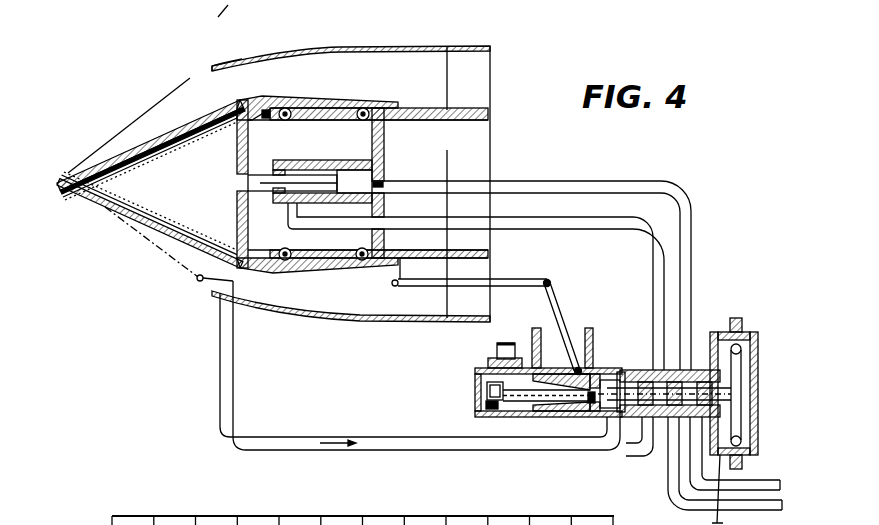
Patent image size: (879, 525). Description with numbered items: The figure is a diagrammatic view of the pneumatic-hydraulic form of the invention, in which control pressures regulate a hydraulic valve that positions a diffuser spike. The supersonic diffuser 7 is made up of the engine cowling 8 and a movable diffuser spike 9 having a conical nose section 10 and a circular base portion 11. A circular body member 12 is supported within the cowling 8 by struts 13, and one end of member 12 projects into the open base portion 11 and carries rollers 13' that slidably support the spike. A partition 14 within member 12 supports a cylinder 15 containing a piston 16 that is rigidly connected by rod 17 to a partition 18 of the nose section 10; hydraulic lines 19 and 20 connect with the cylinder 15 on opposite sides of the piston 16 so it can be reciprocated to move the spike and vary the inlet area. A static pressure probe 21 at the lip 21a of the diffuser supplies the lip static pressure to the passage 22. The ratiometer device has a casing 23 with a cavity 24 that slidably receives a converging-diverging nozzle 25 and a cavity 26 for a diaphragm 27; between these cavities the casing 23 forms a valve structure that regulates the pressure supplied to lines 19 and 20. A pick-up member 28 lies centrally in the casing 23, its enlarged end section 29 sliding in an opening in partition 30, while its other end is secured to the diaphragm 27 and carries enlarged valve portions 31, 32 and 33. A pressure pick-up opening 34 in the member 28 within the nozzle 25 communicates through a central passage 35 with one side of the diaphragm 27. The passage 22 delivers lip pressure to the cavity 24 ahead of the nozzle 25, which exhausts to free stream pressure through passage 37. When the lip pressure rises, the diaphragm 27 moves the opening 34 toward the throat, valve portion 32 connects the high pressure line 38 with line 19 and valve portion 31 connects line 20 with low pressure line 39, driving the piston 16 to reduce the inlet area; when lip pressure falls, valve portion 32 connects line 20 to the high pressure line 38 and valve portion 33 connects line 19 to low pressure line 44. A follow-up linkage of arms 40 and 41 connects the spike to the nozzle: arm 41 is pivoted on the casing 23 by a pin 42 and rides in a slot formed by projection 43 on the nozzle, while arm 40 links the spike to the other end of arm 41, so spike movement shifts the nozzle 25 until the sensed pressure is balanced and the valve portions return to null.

The supersonic diffuser 7 is at (235, 61).
The engine cowling 8 is at (343, 46).
The movable diffuser spike 9 is at (148, 238).
The conical nose section 10 is at (76, 190).
The circular base portion 11 is at (310, 270).
The circular body member 12 is at (488, 112).
The struts 13 is at (474, 182).
The rollers 13' is at (324, 186).
The partition 14 is at (387, 150).
The cylinder 15 is at (305, 164).
The piston 16 is at (333, 170).
The rod 17 is at (262, 176).
The partition 18 is at (242, 240).
The hydraulic line 19 is at (600, 181).
The hydraulic line 20 is at (597, 218).
The static pressure probe 21 is at (197, 282).
The lip 21a is at (208, 108).
The passage 22 is at (228, 412).
The casing 23 is at (476, 409).
The cavity 24 is at (528, 403).
The converging-diverging nozzle 25 is at (594, 418).
The cavity 26 is at (746, 381).
The diaphragm 27 is at (752, 343).
The pick-up member 28 is at (508, 401).
The enlarged end section 29 is at (486, 390).
The partition 30 is at (484, 418).
The valve portion 31 is at (642, 380).
The valve portion 32 is at (672, 369).
The valve portion 33 is at (702, 380).
The pressure pick-up opening 34 is at (576, 414).
The central passage 35 is at (619, 377).
The passage 37 is at (497, 352).
The high pressure line 38 is at (673, 494).
The low pressure line 39 is at (650, 430).
The arm 40 is at (520, 279).
The arm 41 is at (557, 298).
The pin 42 is at (563, 328).
The projection 43 is at (574, 371).
The low pressure line 44 is at (772, 480).